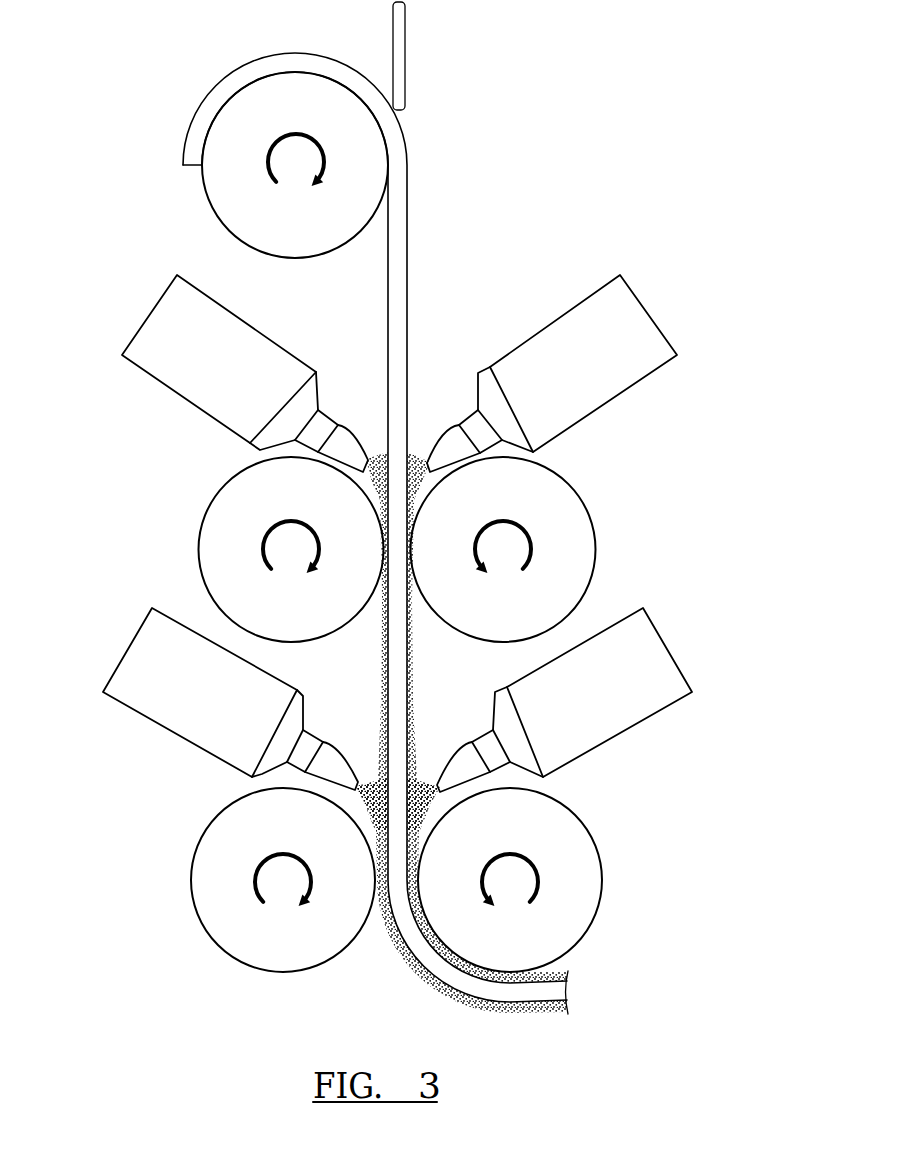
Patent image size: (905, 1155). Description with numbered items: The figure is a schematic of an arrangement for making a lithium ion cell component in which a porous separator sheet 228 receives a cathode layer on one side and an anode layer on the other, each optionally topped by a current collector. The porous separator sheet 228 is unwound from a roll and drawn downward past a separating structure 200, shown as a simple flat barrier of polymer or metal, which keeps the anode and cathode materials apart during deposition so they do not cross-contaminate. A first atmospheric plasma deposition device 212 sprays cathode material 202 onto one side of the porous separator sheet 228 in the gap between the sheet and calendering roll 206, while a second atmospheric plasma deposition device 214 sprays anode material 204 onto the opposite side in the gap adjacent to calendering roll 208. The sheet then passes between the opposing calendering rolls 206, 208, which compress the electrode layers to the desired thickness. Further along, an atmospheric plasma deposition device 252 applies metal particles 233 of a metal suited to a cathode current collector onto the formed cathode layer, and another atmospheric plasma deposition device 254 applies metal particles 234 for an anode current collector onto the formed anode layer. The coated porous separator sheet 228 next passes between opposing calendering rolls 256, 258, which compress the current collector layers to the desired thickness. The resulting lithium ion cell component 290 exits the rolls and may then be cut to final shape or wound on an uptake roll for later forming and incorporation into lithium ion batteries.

The separating structure 200 is at (407, 65).
The porous separator sheet 228 is at (407, 177).
The first coating material 202 is at (378, 465).
The second coating material 204 is at (417, 465).
The first atmospheric plasma deposition device 212 is at (140, 327).
The second atmospheric plasma deposition device 214 is at (657, 327).
The calendering roll 206 is at (198, 540).
The calendering roll 208 is at (597, 540).
The metal particles 233 is at (378, 785).
The fourth coating material 234 is at (414, 785).
The atmospheric plasma deposition device 252 is at (139, 630).
The atmospheric plasma deposition device 254 is at (656, 630).
The calendering roll 256 is at (197, 842).
The calendering roll 258 is at (597, 842).
The lithium ion cell component 290 is at (416, 971).